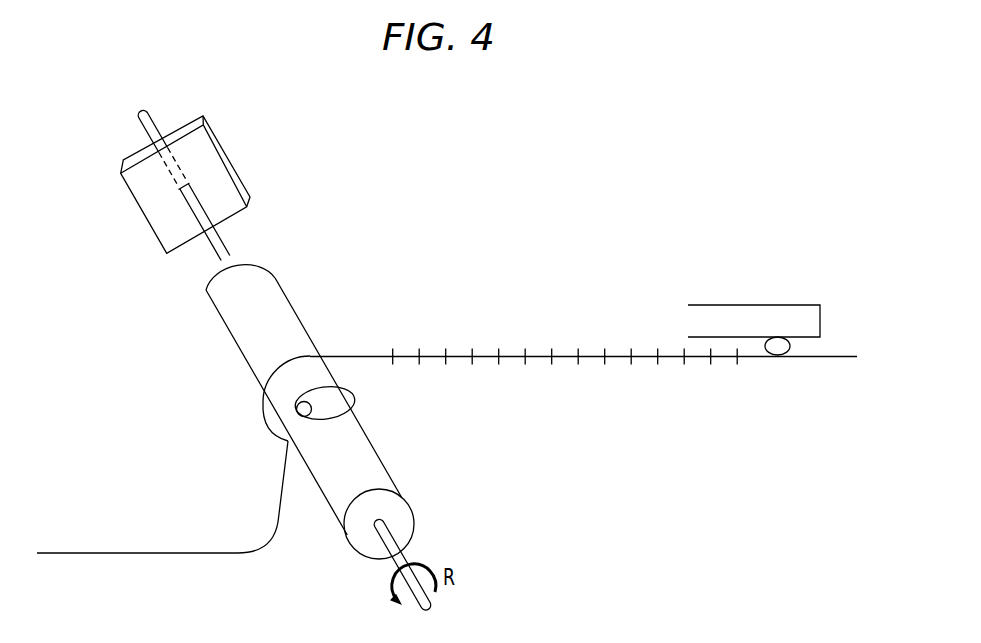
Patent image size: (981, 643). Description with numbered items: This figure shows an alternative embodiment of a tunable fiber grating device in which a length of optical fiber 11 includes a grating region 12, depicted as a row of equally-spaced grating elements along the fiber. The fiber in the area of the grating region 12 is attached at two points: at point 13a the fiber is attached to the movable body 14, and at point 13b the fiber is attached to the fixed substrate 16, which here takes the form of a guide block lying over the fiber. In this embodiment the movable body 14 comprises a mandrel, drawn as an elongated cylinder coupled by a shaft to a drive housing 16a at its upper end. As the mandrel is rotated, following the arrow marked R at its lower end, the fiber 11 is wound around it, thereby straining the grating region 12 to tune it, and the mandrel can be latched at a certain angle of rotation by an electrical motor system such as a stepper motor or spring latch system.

The optical fiber 11 is at (185, 553).
The grating region 12 is at (564, 340).
The attachment point 13a is at (348, 416).
The attachment point 13b is at (790, 352).
The movable body 14 is at (330, 495).
The fixed substrate 16 is at (752, 305).
The drive block / motor housing 16a is at (243, 158).